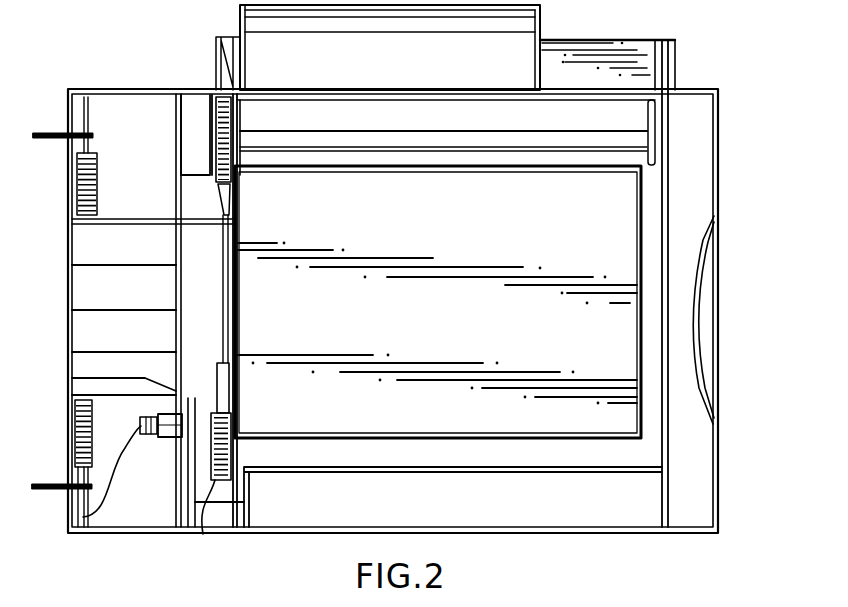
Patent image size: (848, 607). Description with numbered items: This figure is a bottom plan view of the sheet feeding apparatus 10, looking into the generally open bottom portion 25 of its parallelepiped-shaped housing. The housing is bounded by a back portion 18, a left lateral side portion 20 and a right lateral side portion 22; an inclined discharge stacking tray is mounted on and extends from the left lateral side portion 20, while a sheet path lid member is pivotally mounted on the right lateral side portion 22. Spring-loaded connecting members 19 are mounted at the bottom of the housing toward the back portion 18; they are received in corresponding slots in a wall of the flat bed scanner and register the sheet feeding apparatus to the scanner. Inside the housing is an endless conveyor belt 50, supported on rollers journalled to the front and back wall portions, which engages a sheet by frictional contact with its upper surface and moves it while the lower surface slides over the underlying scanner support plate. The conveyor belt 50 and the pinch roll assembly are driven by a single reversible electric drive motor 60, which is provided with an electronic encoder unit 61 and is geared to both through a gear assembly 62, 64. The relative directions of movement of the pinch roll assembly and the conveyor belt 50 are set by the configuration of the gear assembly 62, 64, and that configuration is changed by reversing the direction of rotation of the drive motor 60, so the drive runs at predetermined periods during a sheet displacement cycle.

The apparatus housing 10 is at (706, 85).
The back portion 18 is at (72, 224).
The spring-loaded connecting members 19 is at (46, 133).
The left lateral side portion 20 is at (655, 36).
The right lateral side portion 22 is at (631, 533).
The open bottom portion 25 is at (655, 195).
The endless conveyor belt 50 is at (615, 267).
The reversible electric drive motor 60 is at (172, 439).
The electronic encoder unit 61 is at (68, 515).
The gear assembly 62 is at (216, 118).
The gear assembly 64 is at (215, 488).